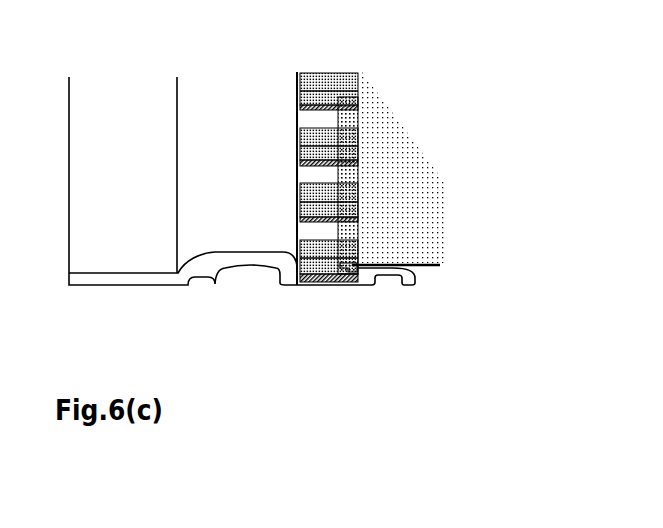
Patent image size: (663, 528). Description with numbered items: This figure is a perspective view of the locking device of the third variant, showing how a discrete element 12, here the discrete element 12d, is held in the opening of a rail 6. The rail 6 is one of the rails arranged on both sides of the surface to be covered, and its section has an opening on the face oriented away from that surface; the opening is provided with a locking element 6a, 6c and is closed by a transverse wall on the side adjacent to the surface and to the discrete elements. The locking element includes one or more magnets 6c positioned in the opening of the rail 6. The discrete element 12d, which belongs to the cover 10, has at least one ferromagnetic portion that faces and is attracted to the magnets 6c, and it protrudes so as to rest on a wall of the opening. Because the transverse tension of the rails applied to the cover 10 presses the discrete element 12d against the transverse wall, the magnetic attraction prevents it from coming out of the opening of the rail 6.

The rail 6 is at (313, 285).
The locking element 6a is at (278, 90).
The magnet 6c is at (327, 283).
The cover 10 is at (422, 268).
The electrode terminal 12 is at (348, 271).
The discrete element 12d is at (323, 135).